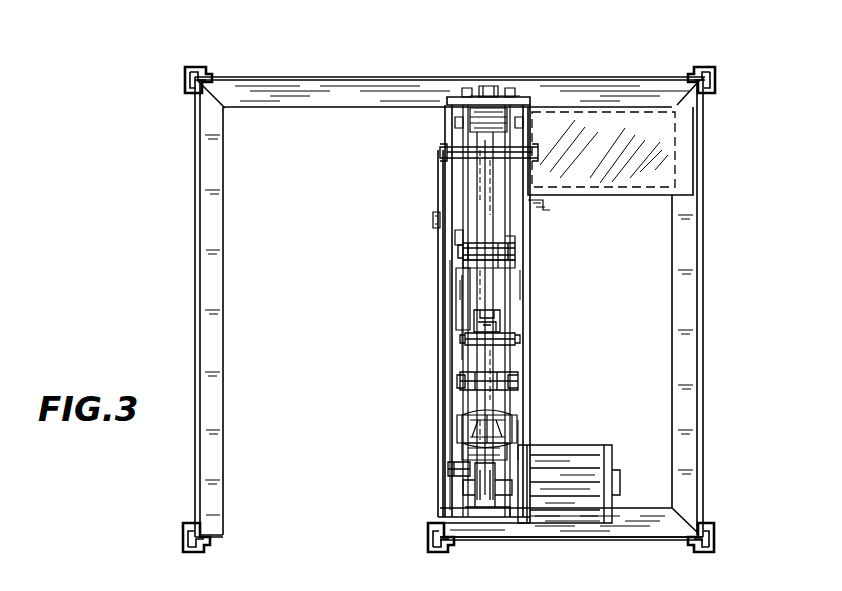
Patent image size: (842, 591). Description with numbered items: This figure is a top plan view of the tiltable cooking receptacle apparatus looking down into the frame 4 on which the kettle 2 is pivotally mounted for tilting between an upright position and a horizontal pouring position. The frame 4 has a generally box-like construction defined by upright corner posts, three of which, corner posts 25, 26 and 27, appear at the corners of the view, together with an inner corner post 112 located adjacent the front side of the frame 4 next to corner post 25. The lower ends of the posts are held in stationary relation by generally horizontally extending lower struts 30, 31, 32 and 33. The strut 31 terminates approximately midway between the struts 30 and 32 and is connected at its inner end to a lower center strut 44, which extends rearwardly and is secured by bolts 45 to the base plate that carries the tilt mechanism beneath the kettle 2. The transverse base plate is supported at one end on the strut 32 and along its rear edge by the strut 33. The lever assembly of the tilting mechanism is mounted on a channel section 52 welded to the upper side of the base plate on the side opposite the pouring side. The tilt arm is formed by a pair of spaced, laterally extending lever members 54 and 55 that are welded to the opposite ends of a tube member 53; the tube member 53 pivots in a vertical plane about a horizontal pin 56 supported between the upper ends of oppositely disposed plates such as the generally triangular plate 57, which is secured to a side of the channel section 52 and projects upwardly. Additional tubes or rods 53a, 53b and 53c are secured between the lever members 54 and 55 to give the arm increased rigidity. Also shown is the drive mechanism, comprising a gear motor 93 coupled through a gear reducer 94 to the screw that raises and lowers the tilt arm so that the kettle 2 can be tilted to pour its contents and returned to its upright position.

The kettle 2 is at (182, 544).
The frame 4 is at (613, 77).
The corner post 25 is at (716, 537).
The corner post 26 is at (718, 76).
The corner post 27 is at (187, 70).
The lower strut 30 is at (212, 256).
The lower strut 31 is at (641, 520).
The lower strut 32 is at (690, 268).
The lower strut 33 is at (283, 95).
The lower center strut 44 is at (440, 404).
The bolts 45 is at (433, 215).
The channel section 52 is at (456, 254).
The tube member 53 is at (447, 168).
The tube or rod 53a is at (505, 250).
The tube or rod 53b is at (467, 344).
The tube or rod 53c is at (450, 470).
The lever member 54 is at (457, 292).
The lever member 55 is at (512, 308).
The pin 56 is at (502, 157).
The plate 57 is at (458, 238).
The gear motor 93 is at (558, 503).
The gear reducer 94 is at (470, 503).
The inner corner post 112 is at (427, 536).